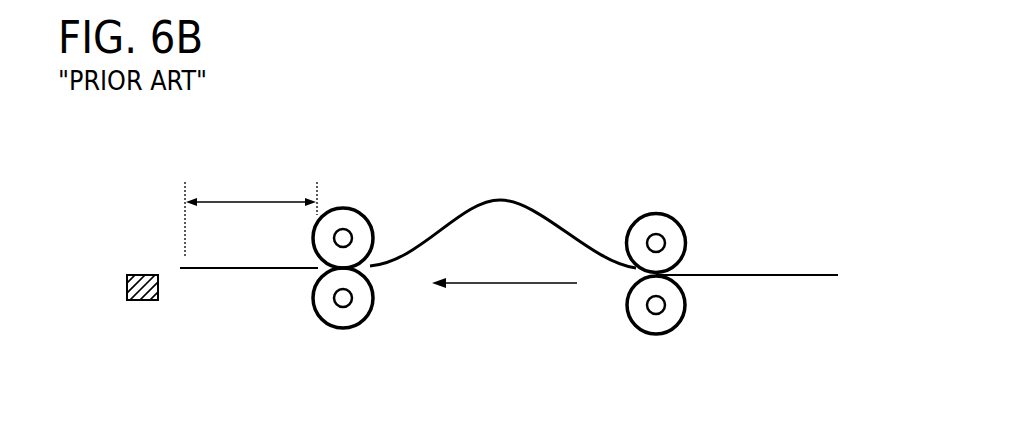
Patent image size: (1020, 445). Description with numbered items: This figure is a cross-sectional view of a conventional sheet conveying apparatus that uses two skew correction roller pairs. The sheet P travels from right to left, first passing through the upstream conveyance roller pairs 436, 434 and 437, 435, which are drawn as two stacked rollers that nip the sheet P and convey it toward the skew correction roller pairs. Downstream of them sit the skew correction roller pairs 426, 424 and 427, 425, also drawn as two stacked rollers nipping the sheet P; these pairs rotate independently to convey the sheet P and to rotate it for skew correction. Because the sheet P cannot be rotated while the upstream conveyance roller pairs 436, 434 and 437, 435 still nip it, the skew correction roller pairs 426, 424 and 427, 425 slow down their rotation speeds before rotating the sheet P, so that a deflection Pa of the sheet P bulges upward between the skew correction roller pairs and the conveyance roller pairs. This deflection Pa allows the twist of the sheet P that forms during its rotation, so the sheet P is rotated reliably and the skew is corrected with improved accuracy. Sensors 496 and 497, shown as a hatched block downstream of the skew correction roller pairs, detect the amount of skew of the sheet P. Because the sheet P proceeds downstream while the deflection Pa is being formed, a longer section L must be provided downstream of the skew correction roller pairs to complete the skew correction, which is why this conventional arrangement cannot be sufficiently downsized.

The skew correction roller 426 is at (362, 180).
The skew correction roller 427 is at (343, 208).
The skew correction roller 424 is at (388, 329).
The skew correction roller 425 is at (343, 328).
The conveyance roller 436 is at (684, 196).
The conveyance roller 437 is at (665, 214).
The conveyance roller 434 is at (705, 326).
The conveyance roller 435 is at (663, 332).
The sensor 496 is at (131, 326).
The sensor 497 is at (133, 300).
The deflection Pa is at (500, 198).
The sheet P is at (768, 275).
The section L is at (251, 212).